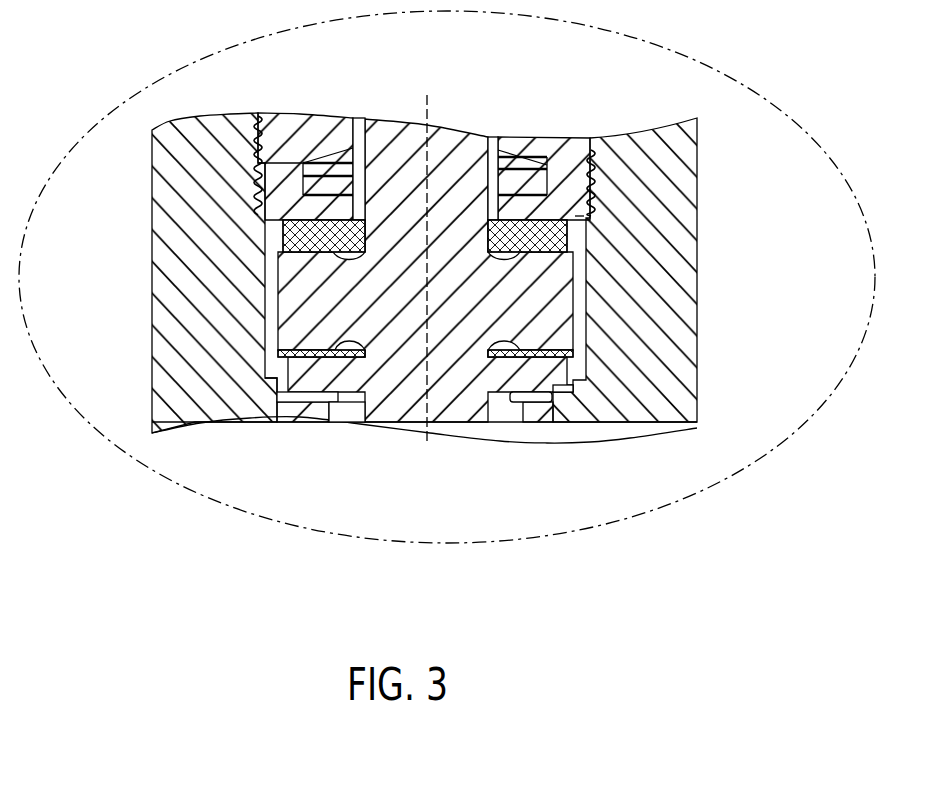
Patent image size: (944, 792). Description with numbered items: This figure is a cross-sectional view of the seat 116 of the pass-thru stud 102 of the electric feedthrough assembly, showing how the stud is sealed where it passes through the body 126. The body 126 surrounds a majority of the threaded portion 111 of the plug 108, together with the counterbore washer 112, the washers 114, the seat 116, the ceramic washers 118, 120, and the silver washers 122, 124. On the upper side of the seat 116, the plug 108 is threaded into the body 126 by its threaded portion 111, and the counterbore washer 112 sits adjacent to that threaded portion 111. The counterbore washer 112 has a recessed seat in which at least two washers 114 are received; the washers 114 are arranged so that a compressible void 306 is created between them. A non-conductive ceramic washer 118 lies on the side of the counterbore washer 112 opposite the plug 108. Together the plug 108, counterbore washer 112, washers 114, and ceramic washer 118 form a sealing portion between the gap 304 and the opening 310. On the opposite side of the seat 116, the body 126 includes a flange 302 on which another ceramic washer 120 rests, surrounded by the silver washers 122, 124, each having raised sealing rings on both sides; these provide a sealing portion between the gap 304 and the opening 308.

The pass-thru stud 102 is at (382, 413).
The plug 108 is at (552, 138).
The threaded portion 111 is at (262, 116).
The counterbore washer 112 is at (577, 217).
The washers 114 is at (547, 165).
The seat 116 is at (313, 295).
The ceramic washer 118 is at (283, 235).
The ceramic washer 120 is at (555, 398).
The silver washer 122 is at (573, 356).
The silver washer 124 is at (550, 403).
The body 126 is at (697, 312).
The flange 302 is at (305, 407).
The gap 304 is at (270, 377).
The compressible void 306 is at (513, 178).
The opening 308 is at (343, 430).
The opening 310 is at (361, 112).